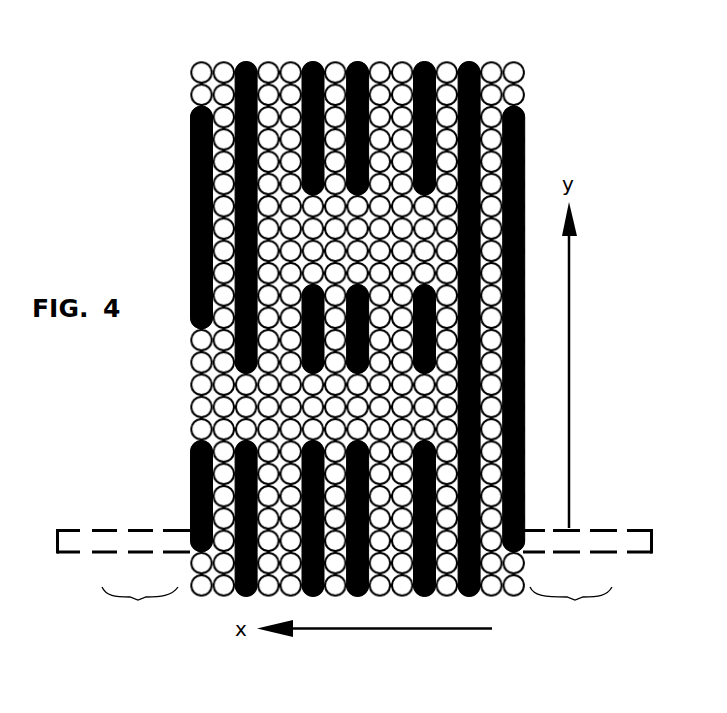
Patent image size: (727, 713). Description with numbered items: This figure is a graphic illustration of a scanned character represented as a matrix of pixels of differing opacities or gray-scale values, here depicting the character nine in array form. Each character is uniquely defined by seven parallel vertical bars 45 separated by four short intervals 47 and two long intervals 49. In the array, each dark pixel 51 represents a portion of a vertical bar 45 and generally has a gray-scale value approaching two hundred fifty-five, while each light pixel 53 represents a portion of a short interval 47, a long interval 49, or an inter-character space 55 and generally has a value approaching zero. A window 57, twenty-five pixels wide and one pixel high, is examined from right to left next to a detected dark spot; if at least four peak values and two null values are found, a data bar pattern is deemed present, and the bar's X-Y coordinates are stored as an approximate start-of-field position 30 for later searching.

The start-of-field position 30 is at (530, 542).
The vertical bar 45 is at (510, 63).
The short interval 47 is at (229, 62).
The long interval 49 is at (258, 59).
The dark pixel 51 is at (525, 537).
The light pixel 53 is at (527, 558).
The inter-character space 55 is at (138, 600).
The window 57 is at (640, 528).